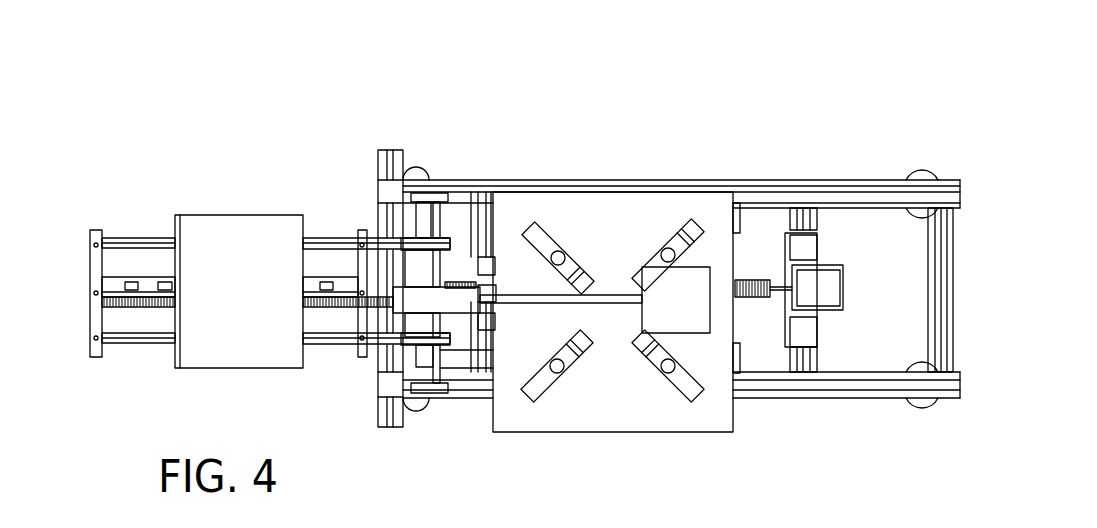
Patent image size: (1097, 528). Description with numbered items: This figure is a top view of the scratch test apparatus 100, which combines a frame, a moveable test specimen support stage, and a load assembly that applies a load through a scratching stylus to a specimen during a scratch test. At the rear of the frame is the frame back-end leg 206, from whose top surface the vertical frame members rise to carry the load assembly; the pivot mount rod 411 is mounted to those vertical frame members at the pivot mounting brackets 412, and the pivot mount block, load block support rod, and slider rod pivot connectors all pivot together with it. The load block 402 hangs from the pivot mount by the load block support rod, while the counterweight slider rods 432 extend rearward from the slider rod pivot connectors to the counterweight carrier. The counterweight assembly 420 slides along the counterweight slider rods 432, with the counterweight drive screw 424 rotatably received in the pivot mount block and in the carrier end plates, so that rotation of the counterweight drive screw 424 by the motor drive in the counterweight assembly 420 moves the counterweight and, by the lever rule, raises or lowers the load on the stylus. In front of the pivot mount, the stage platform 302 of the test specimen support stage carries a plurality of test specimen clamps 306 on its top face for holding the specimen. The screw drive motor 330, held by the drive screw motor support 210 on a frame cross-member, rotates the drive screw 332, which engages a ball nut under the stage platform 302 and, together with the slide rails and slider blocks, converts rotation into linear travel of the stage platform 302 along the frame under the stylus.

The scratch test apparatus 100 is at (717, 163).
The frame back-end leg 206 is at (380, 413).
The drive screw motor support 210 is at (812, 337).
The stage platform 302 is at (633, 201).
The test specimen clamps 306 is at (673, 245).
The screw drive motor 330 is at (835, 288).
The drive screw 332 is at (752, 282).
The load block 402 is at (690, 323).
The pivot mount rod 411 is at (437, 227).
The pivot mounting brackets 412 is at (437, 193).
The counterweight assembly 420 is at (237, 227).
The counterweight drive screw 424 is at (337, 308).
The counterweight slider rods 432 is at (152, 242).